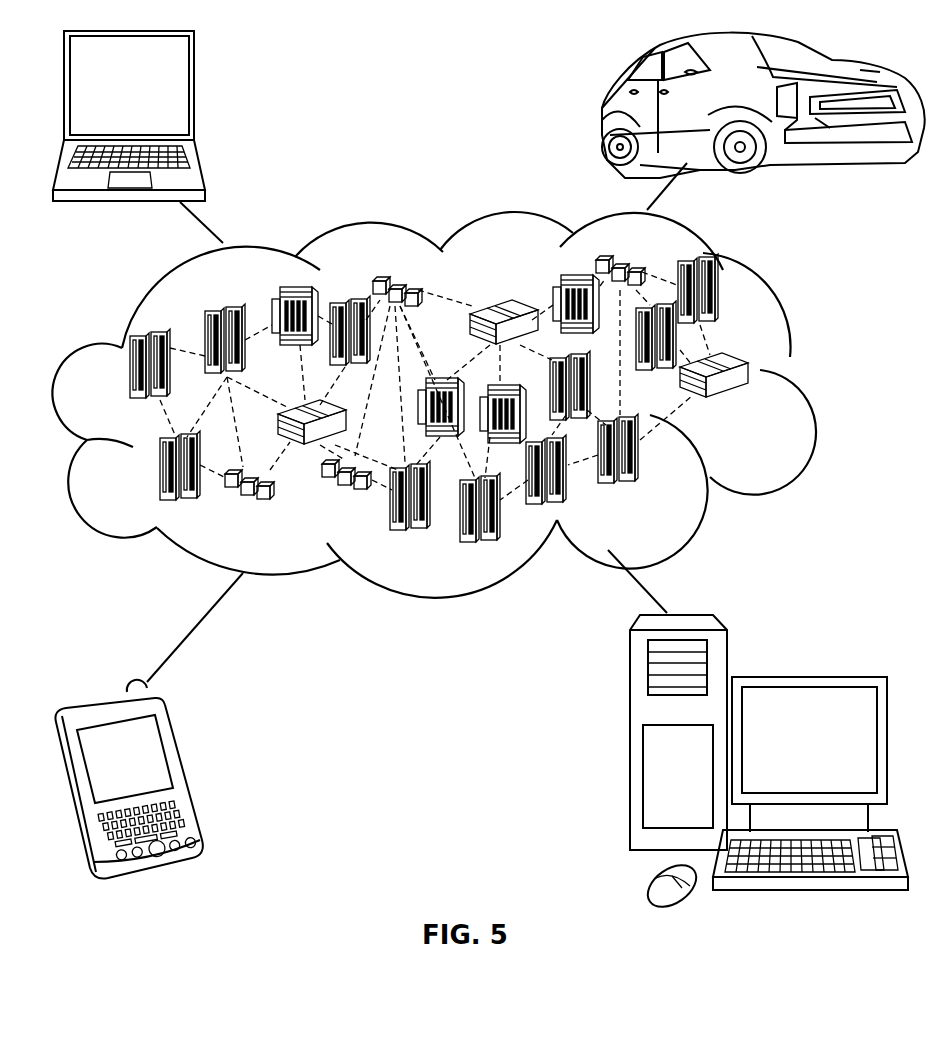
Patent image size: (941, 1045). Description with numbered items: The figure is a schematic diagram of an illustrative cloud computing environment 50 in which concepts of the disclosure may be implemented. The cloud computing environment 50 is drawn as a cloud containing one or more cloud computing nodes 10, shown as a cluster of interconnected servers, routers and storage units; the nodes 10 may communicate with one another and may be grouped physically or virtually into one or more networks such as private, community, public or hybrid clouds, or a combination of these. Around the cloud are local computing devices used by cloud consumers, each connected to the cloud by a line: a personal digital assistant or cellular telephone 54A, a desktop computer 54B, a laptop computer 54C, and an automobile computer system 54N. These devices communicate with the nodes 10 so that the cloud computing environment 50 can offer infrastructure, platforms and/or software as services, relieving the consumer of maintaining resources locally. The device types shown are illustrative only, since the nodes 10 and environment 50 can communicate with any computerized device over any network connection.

The cloud computing nodes 10 is at (760, 416).
The cloud computing environment 50 is at (808, 381).
The personal digital assistant or cellular telephone 54A is at (184, 771).
The desktop computer 54B is at (807, 677).
The laptop computer 54C is at (194, 91).
The automobile computer system 54N is at (602, 108).